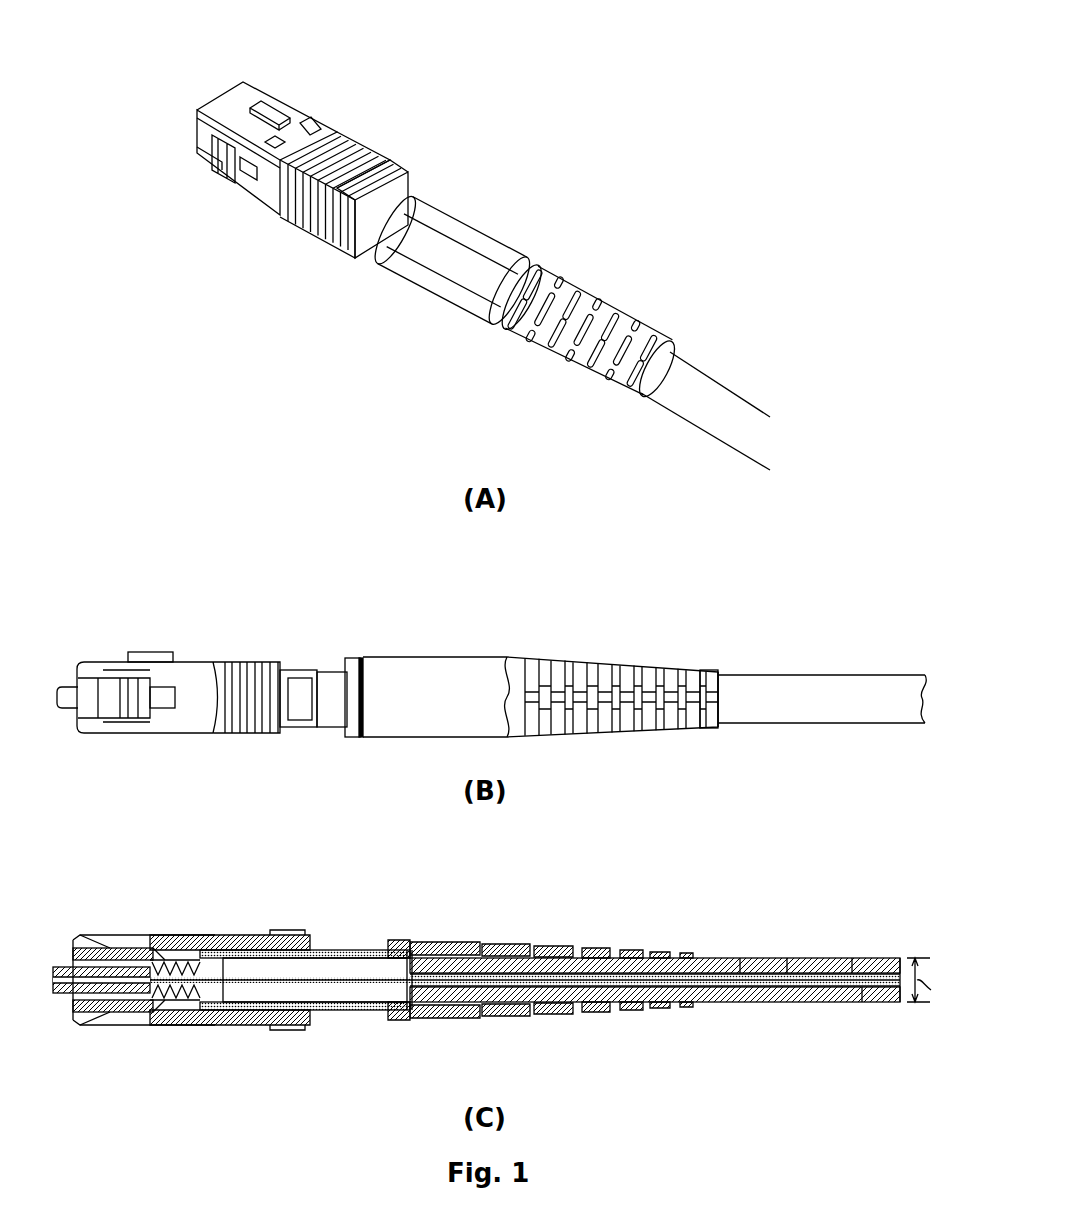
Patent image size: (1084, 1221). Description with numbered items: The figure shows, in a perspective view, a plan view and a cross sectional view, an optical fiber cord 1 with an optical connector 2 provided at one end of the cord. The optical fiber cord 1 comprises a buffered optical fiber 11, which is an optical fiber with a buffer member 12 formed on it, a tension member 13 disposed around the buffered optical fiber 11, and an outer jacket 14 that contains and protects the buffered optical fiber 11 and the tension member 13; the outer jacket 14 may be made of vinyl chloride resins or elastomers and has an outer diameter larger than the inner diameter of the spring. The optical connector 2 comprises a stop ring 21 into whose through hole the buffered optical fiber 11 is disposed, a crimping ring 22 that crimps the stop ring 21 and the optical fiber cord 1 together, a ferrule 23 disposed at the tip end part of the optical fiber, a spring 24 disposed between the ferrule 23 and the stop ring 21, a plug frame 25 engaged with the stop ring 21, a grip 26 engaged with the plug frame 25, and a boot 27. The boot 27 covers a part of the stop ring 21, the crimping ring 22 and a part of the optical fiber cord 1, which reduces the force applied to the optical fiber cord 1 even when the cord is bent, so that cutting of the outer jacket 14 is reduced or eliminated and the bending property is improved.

The optical fiber cord 1 is at (682, 360).
The optical connector 2 is at (312, 110).
The buffered optical fiber 11 is at (740, 960).
The buffer member 12 is at (787, 960).
The tension member 13 is at (852, 960).
The outer jacket 14 is at (862, 1004).
The stop ring 21 is at (326, 680).
The crimping ring 22 is at (428, 942).
The ferrule 23 is at (64, 688).
The spring 24 is at (153, 1012).
The plug frame 25 is at (131, 683).
The grip 26 is at (214, 680).
The boot 27 is at (424, 673).